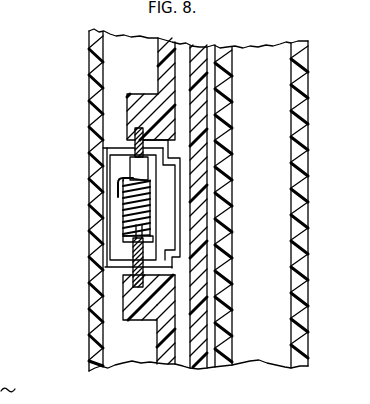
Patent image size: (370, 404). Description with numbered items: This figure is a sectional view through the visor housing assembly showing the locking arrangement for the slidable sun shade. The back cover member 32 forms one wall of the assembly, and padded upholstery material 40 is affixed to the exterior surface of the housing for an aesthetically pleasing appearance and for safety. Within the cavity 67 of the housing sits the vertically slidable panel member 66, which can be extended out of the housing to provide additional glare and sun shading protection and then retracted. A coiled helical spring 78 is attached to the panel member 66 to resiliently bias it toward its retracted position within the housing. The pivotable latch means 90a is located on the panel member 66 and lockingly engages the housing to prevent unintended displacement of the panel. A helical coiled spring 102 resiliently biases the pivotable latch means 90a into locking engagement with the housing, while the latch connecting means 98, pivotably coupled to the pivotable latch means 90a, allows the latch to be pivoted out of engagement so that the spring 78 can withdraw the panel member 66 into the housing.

The back cover member 32 is at (110, 362).
The coiled helical spring 78 is at (45, 352).
The cavity 67 is at (118, 333).
The vertically slidable panel member 66 is at (163, 357).
The padded upholstery material 40 is at (100, 196).
The latch connecting means 98 is at (180, 186).
The pivotable latch means 90a is at (105, 165).
The helical coiled spring 102 is at (123, 214).